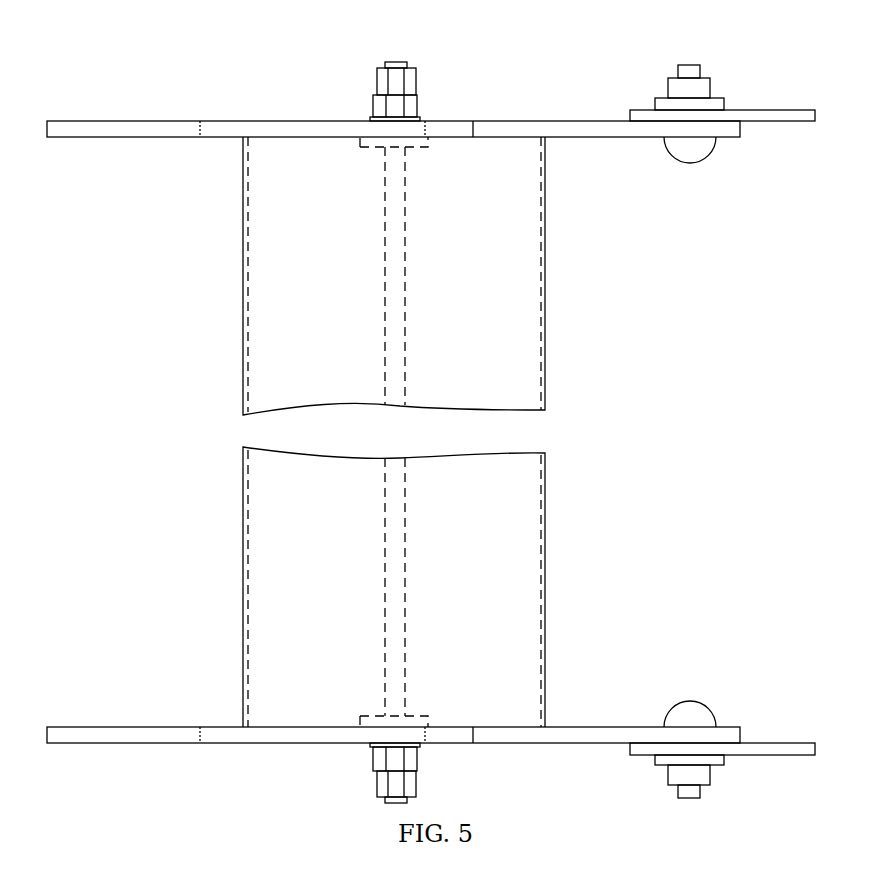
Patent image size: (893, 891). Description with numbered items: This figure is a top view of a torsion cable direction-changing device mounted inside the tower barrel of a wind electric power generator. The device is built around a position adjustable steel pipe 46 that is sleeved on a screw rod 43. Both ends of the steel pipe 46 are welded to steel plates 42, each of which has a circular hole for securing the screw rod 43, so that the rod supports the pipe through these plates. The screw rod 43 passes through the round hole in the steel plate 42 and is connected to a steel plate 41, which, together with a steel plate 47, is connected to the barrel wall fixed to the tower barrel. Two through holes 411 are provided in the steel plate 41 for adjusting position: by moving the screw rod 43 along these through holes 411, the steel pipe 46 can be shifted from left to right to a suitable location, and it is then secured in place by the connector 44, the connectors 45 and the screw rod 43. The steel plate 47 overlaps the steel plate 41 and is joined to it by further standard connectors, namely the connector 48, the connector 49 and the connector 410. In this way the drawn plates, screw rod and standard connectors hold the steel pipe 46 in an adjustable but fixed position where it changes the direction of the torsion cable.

The steel plate 41 is at (133, 121).
The through holes 411 is at (230, 128).
The steel plate 42 is at (430, 146).
The screw rod 43 is at (406, 287).
The connector 44 is at (420, 115).
The connector 45 is at (378, 85).
The steel pipe 46 is at (243, 270).
The steel plate 47 is at (632, 111).
The connector 48 is at (690, 65).
The connector 49 is at (706, 78).
The connector 410 is at (720, 100).